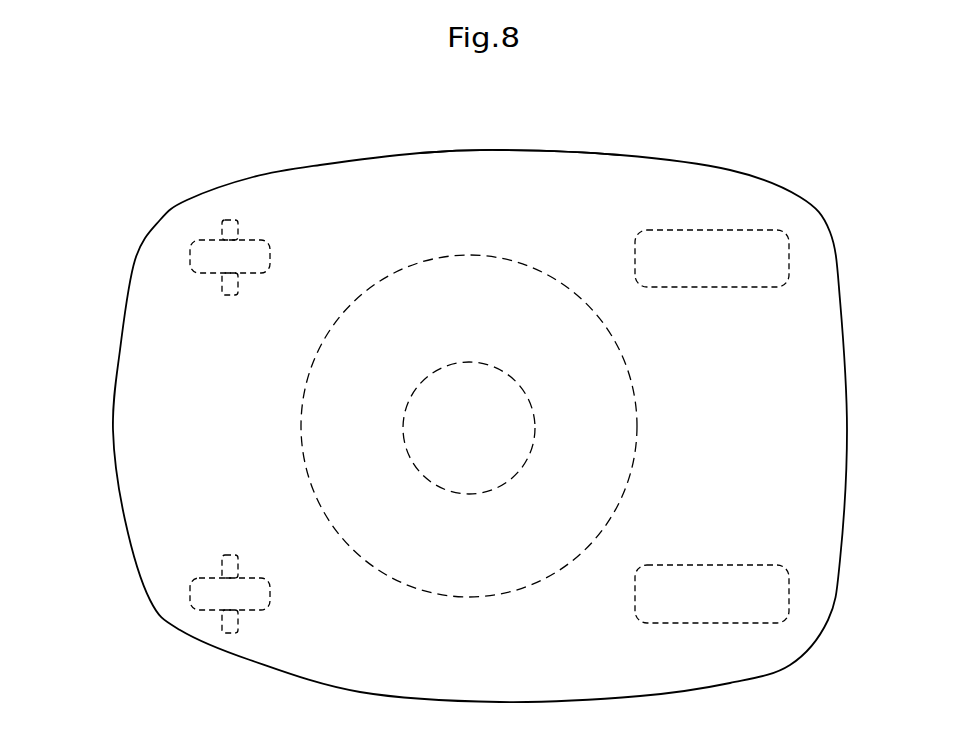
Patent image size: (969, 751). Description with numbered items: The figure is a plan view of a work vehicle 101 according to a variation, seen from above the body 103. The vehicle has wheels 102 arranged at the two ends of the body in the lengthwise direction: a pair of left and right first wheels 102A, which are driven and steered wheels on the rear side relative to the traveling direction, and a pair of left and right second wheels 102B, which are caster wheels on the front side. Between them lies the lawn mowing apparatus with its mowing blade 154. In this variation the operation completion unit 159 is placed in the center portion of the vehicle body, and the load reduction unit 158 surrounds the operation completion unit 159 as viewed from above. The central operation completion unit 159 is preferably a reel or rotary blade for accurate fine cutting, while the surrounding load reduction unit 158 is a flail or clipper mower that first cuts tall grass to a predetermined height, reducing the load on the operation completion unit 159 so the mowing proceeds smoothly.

The work vehicle 101 is at (207, 167).
The body 103 is at (495, 163).
The wheels 102 is at (429, 430).
The first wheels 102A is at (713, 235).
The second wheels 102B is at (190, 253).
The mowing blade 154 is at (469, 449).
The load reduction unit 158 is at (530, 548).
The operation completion unit 159 is at (468, 376).